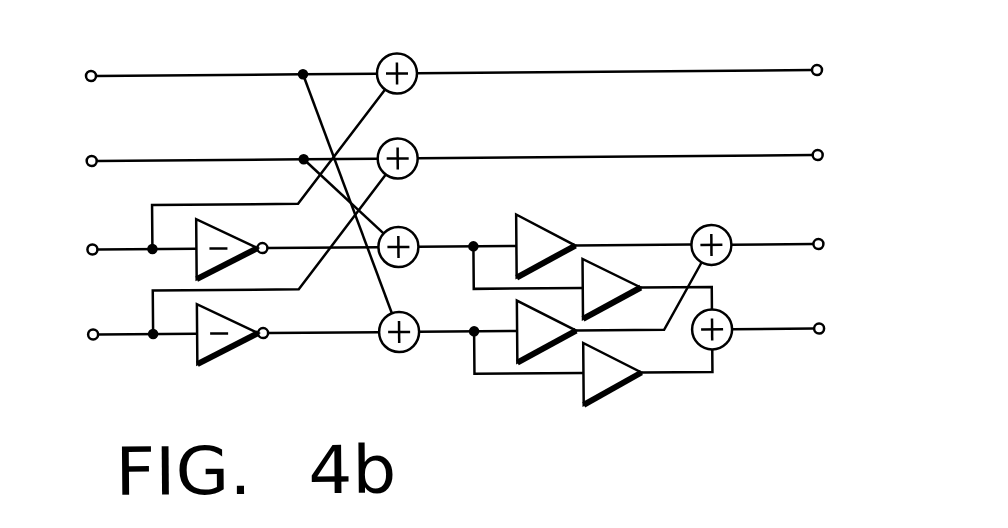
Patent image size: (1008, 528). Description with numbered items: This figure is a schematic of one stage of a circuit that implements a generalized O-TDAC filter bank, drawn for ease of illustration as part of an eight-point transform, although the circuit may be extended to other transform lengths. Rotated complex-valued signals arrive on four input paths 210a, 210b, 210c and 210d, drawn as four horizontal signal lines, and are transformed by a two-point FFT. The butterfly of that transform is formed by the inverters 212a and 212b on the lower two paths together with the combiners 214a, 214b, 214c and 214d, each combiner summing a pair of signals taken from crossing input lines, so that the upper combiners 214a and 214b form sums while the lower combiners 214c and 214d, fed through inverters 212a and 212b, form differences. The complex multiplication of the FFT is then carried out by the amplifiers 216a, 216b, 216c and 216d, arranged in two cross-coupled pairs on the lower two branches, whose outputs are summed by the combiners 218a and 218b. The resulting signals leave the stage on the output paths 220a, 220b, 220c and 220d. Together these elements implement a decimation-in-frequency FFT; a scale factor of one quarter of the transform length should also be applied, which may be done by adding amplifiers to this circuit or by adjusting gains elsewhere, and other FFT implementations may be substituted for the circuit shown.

The path 210a is at (135, 76).
The path 210b is at (135, 161).
The path 210c is at (135, 250).
The path 210d is at (135, 334).
The inverter 212a is at (228, 236).
The inverter 212b is at (228, 321).
The combiner 214a is at (411, 62).
The combiner 214b is at (411, 147).
The combiner 214c is at (411, 236).
The combiner 214d is at (395, 355).
The amplifier 216a is at (535, 229).
The amplifier 216b is at (593, 268).
The amplifier 216c is at (532, 357).
The amplifier 216d is at (608, 394).
The combiner 218a is at (721, 232).
The combiner 218b is at (721, 317).
The first output terminal 220a is at (753, 75).
The second output terminal 220b is at (753, 160).
The third output terminal 220c is at (753, 249).
The fourth output terminal 220d is at (753, 334).